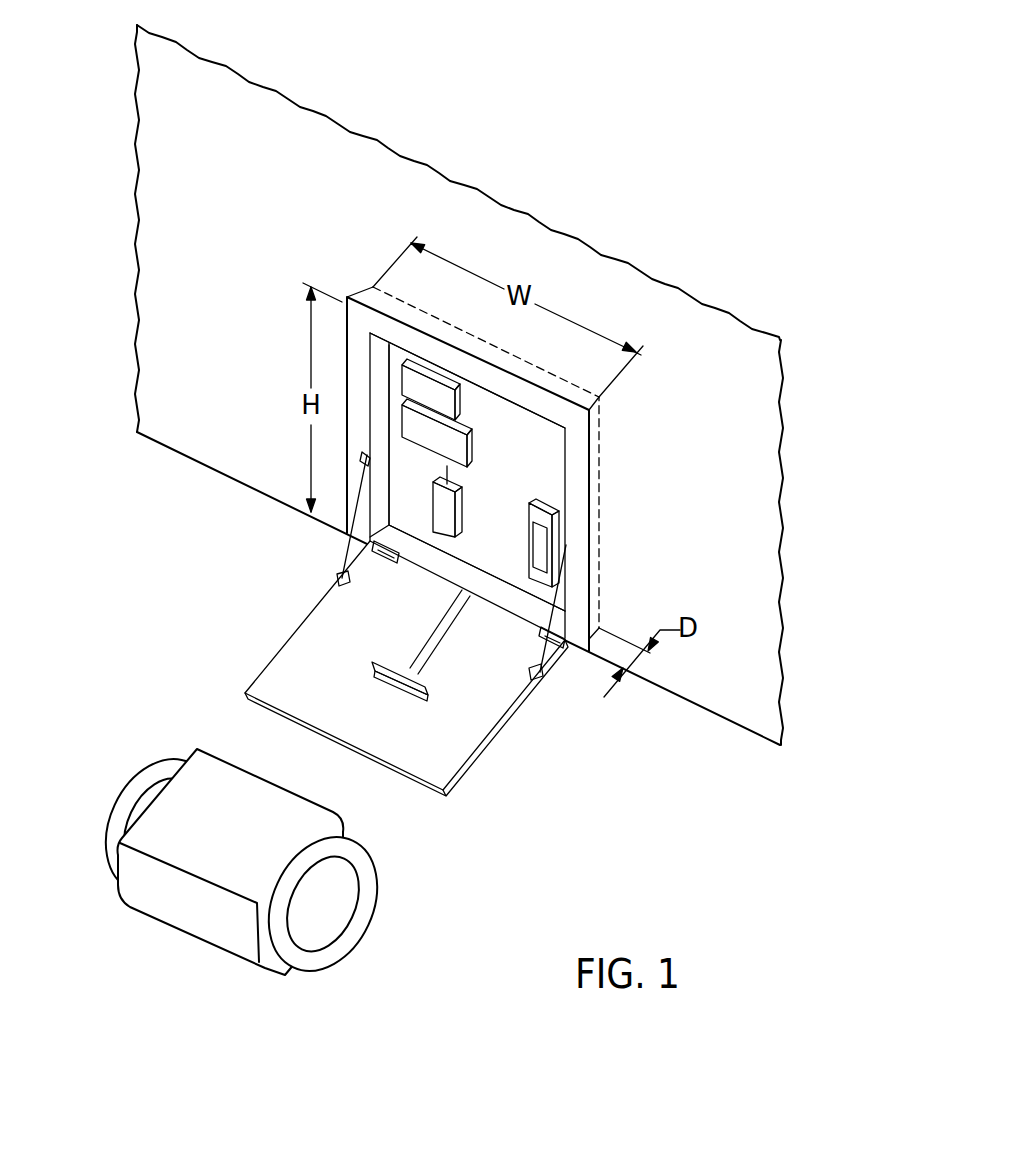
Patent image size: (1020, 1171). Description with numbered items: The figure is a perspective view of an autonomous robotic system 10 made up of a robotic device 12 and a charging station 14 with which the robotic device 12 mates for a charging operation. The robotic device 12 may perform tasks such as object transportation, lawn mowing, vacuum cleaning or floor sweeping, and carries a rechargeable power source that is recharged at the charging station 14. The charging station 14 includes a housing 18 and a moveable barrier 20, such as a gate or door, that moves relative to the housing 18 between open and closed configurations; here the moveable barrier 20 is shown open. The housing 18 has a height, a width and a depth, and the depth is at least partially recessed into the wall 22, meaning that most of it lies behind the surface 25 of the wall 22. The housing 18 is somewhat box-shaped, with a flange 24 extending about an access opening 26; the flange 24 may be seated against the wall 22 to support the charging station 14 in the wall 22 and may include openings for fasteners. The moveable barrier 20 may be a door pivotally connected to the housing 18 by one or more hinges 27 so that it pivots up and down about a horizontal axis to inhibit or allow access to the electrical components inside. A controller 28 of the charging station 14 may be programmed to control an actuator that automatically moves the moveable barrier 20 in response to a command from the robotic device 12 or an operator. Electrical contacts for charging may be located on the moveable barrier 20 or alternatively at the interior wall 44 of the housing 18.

The autonomous robotic system 10 is at (92, 540).
The robotic device 12 is at (103, 770).
The charging station 14 is at (643, 407).
The housing 18 is at (599, 488).
The moveable barrier 20 is at (483, 745).
The wall 22 is at (152, 294).
The flange 24 is at (568, 477).
The surface 25 is at (181, 233).
The access opening 26 is at (502, 435).
The hinges 27 is at (558, 633).
The controller 28 is at (385, 549).
The interior wall 44 is at (546, 436).